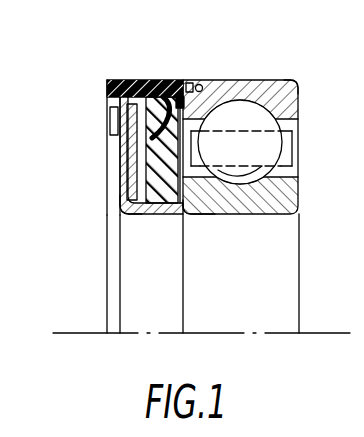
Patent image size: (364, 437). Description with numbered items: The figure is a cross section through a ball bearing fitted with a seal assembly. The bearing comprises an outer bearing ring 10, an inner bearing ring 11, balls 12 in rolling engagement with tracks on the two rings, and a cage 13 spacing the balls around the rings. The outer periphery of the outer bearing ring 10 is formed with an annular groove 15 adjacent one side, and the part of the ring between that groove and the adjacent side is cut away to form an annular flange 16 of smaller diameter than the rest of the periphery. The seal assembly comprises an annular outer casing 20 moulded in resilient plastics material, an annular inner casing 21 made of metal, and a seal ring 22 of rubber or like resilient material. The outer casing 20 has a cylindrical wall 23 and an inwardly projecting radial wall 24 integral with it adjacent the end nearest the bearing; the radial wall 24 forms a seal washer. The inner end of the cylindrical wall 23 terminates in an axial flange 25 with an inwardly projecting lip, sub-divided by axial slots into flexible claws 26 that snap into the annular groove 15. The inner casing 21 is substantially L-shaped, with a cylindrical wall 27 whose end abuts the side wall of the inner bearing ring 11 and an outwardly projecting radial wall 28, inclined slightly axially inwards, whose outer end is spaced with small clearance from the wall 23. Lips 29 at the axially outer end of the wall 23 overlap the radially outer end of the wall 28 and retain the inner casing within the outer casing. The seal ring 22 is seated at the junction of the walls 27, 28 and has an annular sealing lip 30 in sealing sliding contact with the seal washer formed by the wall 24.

The outer bearing ring 10 is at (297, 85).
The inner bearing ring 11 is at (300, 188).
The balls 12 is at (281, 143).
The cage 13 is at (294, 153).
The annular groove 15 is at (267, 80).
The annular flange 16 is at (181, 79).
The annular outer casing 20 is at (144, 79).
The annular inner casing 21 is at (134, 208).
The seal ring 22 is at (150, 175).
The cylindrical wall 23 is at (106, 87).
The radial wall 24 is at (199, 216).
The axial flange 25 is at (200, 82).
The flexible claws 26 is at (218, 94).
The cylindrical wall 27 is at (149, 216).
The radial wall 28 is at (132, 170).
The lips 29 is at (105, 113).
The annular sealing lip 30 is at (122, 146).